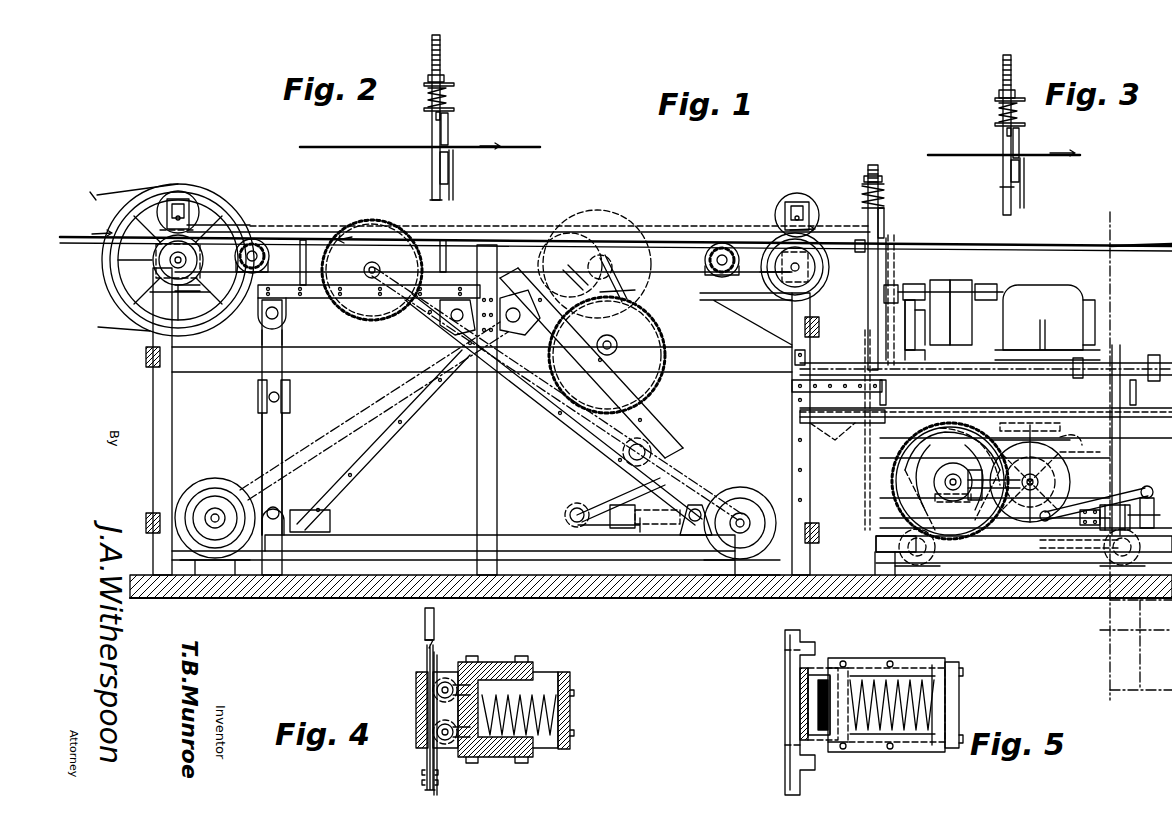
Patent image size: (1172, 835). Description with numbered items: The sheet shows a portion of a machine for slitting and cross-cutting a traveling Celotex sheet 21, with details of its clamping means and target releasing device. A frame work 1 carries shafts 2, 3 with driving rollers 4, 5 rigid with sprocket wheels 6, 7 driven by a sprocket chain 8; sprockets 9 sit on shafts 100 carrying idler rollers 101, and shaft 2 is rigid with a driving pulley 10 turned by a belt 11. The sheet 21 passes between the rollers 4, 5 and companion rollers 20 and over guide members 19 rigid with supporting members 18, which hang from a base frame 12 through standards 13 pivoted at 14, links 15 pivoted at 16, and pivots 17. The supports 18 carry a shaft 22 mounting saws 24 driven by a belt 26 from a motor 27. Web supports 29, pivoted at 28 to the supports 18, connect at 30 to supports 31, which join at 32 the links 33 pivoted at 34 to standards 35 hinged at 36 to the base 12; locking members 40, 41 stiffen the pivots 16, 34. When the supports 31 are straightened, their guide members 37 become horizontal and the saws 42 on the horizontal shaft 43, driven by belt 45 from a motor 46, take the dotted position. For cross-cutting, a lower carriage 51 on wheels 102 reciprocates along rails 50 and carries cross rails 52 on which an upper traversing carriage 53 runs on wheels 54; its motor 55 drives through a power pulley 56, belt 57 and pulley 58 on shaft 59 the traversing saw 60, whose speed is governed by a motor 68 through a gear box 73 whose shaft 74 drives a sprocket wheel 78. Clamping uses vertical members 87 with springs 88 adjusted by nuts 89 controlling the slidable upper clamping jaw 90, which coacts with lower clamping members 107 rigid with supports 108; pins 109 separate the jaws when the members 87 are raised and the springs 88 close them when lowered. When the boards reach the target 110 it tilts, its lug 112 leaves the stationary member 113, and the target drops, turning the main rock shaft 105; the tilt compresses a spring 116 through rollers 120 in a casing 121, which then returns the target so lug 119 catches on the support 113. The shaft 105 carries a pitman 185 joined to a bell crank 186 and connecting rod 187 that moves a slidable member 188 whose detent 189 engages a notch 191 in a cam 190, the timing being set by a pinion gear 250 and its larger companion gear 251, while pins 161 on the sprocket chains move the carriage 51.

In FIG. 1, the frame work 1 is at (155, 365).
In FIG. 1, the shaft 2 is at (153, 260).
In FIG. 1, the shaft 3 is at (800, 260).
In FIG. 1, the driving roller 4 is at (165, 272).
In FIG. 1, the driving roller 5 is at (790, 300).
In FIG. 1, the sprocket wheel 6 is at (232, 230).
In FIG. 1, the sprocket wheel 7 is at (240, 282).
In FIG. 1, the sprocket chain 8 is at (518, 228).
In FIG. 1, the sprockets 9 is at (292, 240).
In FIG. 1, the driving pulley 10 is at (128, 215).
In FIG. 1, the belt 11 is at (108, 190).
In FIG. 1, the base frame 12 is at (400, 533).
In FIG. 1, the standards 13 is at (268, 432).
In FIG. 1, the pivot 14 is at (282, 512).
In FIG. 1, the links 15 is at (262, 340).
In FIG. 1, the pivot 16 is at (288, 392).
In FIG. 1, the pivot 17 is at (265, 318).
In FIG. 1, the supporting members 18 is at (312, 300).
In FIG. 1, the guide members 19 is at (300, 262).
In FIG. 1, the companion rollers 20 is at (166, 199).
In FIG. 1, the Celotex sheet 21 is at (100, 245).
In FIG. 2, the Celotex sheet 21 is at (385, 145).
In FIG. 3, the Celotex sheet 21 is at (975, 153).
In FIG. 1, the shaft 22 is at (362, 232).
In FIG. 1, the saws 24 is at (362, 212).
In FIG. 1, the belt 26 is at (420, 314).
In FIG. 1, the motor 27 is at (746, 488).
In FIG. 1, the pivot 28 is at (450, 318).
In FIG. 1, the web supports 29 is at (455, 358).
In FIG. 1, the pivot 30 is at (513, 305).
In FIG. 1, the supports 31 is at (600, 392).
In FIG. 1, the pivot 32 is at (630, 446).
In FIG. 1, the links 33 is at (598, 492).
In FIG. 1, the pivot 34 is at (570, 510).
In FIG. 1, the standards 35 is at (575, 522).
In FIG. 1, the pivot 36 is at (693, 506).
In FIG. 1, the guide members 37 is at (588, 254).
In FIG. 1, the locking member 40 is at (258, 382).
In FIG. 1, the locking member 41 is at (640, 500).
In FIG. 1, the saws 42 is at (590, 222).
In FIG. 1, the horizontal shaft 43 is at (612, 274).
In FIG. 1, the drive belt 45 is at (330, 412).
In FIG. 1, the motor 46 is at (196, 480).
In FIG. 1, the rails 50 is at (1045, 553).
In FIG. 1, the lower carriage 51 is at (876, 542).
In FIG. 1, the cross rails 52 is at (865, 432).
In FIG. 1, the upper traversing carriage 53 is at (955, 408).
In FIG. 1, the wheels 54 is at (887, 395).
In FIG. 1, the motor 55 is at (1040, 284).
In FIG. 1, the power pulley 56 is at (922, 327).
In FIG. 1, the belt 57 is at (962, 282).
In FIG. 1, the pulley 58 is at (940, 280).
In FIG. 1, the shaft 59 is at (910, 284).
In FIG. 1, the traversing saw 60 is at (900, 265).
In FIG. 1, the motor 68 is at (1105, 438).
In FIG. 1, the gear box 73 is at (1085, 436).
In FIG. 1, the shaft 74 is at (1075, 482).
In FIG. 1, the sprocket wheel 78 is at (1068, 423).
In FIG. 1, the vertical members 87 is at (875, 165).
In FIG. 2, the vertical members 87 is at (441, 50).
In FIG. 3, the vertical members 87 is at (1012, 65).
In FIG. 1, the springs 88 is at (886, 196).
In FIG. 2, the springs 88 is at (448, 94).
In FIG. 3, the springs 88 is at (996, 105).
In FIG. 1, the nuts 89 is at (890, 178).
In FIG. 2, the nuts 89 is at (446, 80).
In FIG. 3, the nuts 89 is at (1018, 95).
In FIG. 1, the upper clamping jaw 90 is at (886, 222).
In FIG. 2, the upper clamping jaw 90 is at (450, 130).
In FIG. 3, the upper clamping jaw 90 is at (1022, 135).
In FIG. 1, the shafts 100 is at (254, 240).
In FIG. 1, the idler rollers 101 is at (268, 245).
In FIG. 1, the wheels 102 is at (895, 556).
In FIG. 1, the main rock shaft 105 is at (1145, 360).
In FIG. 1, the lower clamping members 107 is at (862, 252).
In FIG. 2, the lower clamping members 107 is at (449, 168).
In FIG. 3, the lower clamping members 107 is at (1020, 170).
In FIG. 1, the supports 108 is at (898, 358).
In FIG. 2, the supports 108 is at (454, 190).
In FIG. 3, the supports 108 is at (1026, 195).
In FIG. 2, the pins 109 is at (432, 118).
In FIG. 3, the pins 109 is at (1003, 130).
In FIG. 4, the target 110 is at (436, 645).
In FIG. 5, the target 110 is at (808, 680).
In FIG. 4, the lug 112 is at (430, 660).
In FIG. 5, the lug 112 is at (800, 698).
In FIG. 4, the stationary member 113 is at (416, 682).
In FIG. 5, the stationary member 113 is at (790, 720).
In FIG. 4, the spring 116 is at (548, 690).
In FIG. 5, the spring 116 is at (925, 680).
In FIG. 4, the lug 119 is at (425, 620).
In FIG. 4, the rollers 120 is at (436, 726).
In FIG. 5, the rollers 120 is at (825, 680).
In FIG. 4, the casing 121 is at (492, 662).
In FIG. 5, the casing 121 is at (920, 740).
In FIG. 1, the pin 161 is at (1062, 534).
In FIG. 1, the pitman 185 is at (1142, 486).
In FIG. 1, the bell crank 186 is at (1120, 500).
In FIG. 1, the connecting rod 187 is at (1118, 505).
In FIG. 1, the slidable member 188 is at (1055, 535).
In FIG. 1, the detent 189 is at (990, 468).
In FIG. 1, the cam 190 is at (943, 470).
In FIG. 1, the notch 191 is at (980, 452).
In FIG. 1, the pinion gear 250 is at (1088, 490).
In FIG. 1, the companion gear 251 is at (892, 483).